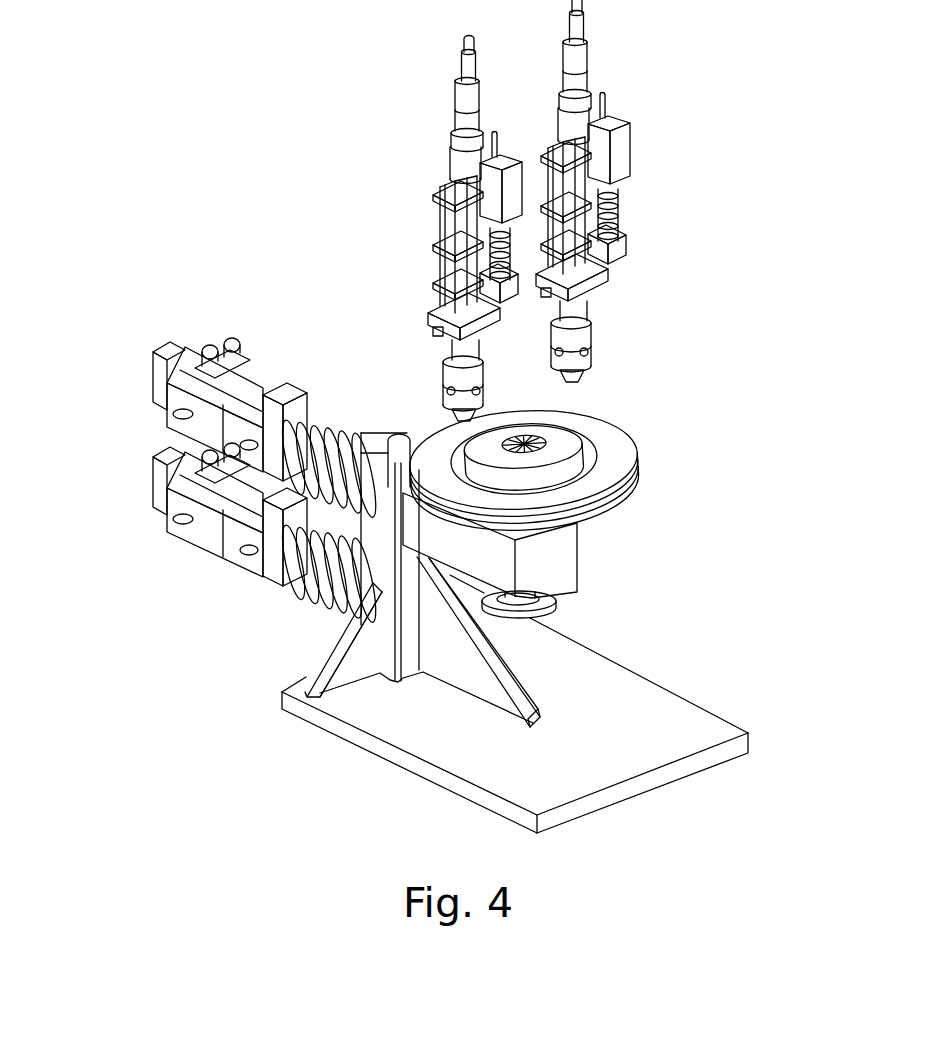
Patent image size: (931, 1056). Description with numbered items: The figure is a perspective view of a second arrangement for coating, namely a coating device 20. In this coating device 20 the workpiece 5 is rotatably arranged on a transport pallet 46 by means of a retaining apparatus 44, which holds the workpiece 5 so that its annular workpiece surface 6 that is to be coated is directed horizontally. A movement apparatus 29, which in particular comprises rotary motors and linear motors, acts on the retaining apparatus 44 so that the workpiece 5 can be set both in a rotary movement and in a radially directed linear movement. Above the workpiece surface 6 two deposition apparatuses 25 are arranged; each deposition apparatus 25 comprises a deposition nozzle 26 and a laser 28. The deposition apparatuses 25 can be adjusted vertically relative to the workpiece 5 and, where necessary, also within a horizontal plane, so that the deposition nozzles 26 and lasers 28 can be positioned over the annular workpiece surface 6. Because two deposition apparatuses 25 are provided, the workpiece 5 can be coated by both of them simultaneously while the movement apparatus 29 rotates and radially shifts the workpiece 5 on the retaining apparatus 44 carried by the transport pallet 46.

The coating device 20 is at (690, 331).
The deposition apparatus 25 is at (455, 220).
The deposition nozzle 26 is at (443, 373).
The laser 28 is at (490, 287).
The movement apparatus 29 is at (190, 420).
The workpiece 5 is at (610, 477).
The workpiece surface 6 is at (602, 450).
The retaining apparatus 44 is at (565, 558).
The transport pallet 46 is at (707, 730).